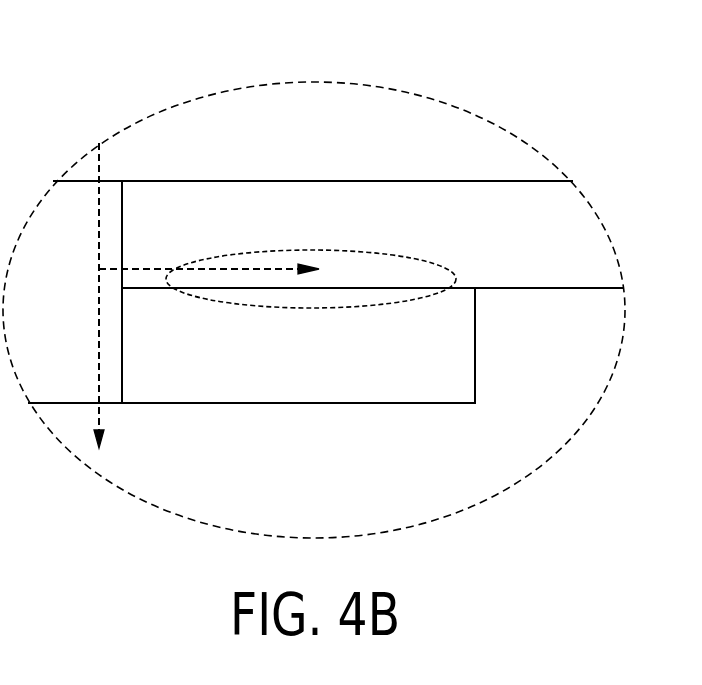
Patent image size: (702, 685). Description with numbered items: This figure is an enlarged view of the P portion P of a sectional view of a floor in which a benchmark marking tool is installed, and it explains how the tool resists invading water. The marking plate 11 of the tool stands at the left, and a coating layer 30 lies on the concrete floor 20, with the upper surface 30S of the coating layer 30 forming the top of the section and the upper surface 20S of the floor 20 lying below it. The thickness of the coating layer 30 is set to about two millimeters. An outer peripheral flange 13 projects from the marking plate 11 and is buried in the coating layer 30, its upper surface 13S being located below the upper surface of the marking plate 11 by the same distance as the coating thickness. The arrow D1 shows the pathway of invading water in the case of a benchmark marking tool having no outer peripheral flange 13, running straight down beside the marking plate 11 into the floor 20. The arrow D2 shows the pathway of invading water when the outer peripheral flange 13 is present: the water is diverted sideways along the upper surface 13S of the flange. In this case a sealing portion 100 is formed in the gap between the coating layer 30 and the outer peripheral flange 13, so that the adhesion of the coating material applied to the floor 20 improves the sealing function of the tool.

The P portion P is at (472, 108).
The coating layer 30 is at (527, 182).
The upper surface of coating layer 30S is at (312, 181).
The outer peripheral flange 13 is at (313, 403).
The upper surface of outer peripheral flange 13S is at (409, 288).
The floor 20 is at (507, 459).
The upper surface of floor 20S is at (563, 288).
The marking plate 11 is at (32, 314).
The sealing portion 100 is at (311, 310).
The arrow D1 is at (99, 365).
The arrow D2 is at (268, 265).